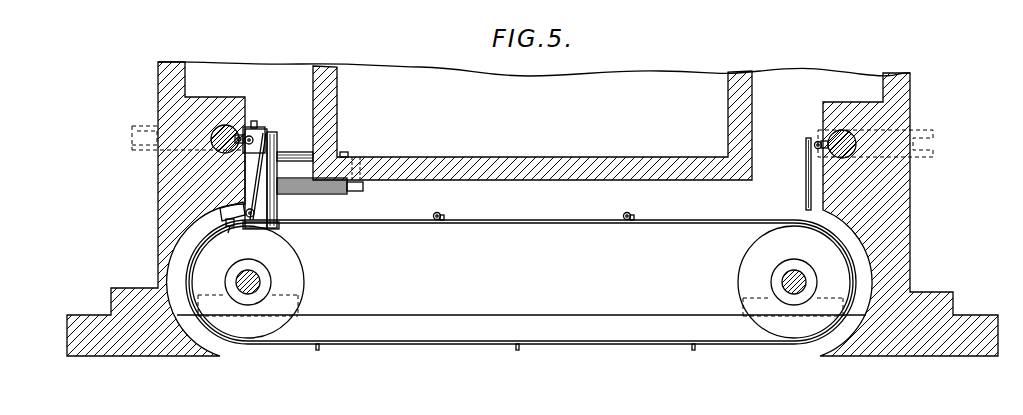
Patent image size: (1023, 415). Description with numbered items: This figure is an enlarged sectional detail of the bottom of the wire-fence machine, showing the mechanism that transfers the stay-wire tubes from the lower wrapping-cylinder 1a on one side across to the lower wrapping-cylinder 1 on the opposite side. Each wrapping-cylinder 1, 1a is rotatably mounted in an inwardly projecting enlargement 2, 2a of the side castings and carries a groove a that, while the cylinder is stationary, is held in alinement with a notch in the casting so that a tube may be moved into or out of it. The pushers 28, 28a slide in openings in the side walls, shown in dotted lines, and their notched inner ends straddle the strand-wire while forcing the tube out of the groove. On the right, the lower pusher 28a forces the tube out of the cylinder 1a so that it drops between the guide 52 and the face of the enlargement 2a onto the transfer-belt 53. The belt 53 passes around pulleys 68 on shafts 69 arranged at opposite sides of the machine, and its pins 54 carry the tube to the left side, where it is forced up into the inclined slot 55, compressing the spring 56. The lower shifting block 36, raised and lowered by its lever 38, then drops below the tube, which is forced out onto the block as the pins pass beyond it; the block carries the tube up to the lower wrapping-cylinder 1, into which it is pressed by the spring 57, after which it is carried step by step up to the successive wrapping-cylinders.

The wrapping-cylinder 1 is at (225, 125).
The wrapping-cylinder 1a is at (848, 148).
The enlargement 2 is at (195, 113).
The enlargement 2a is at (867, 115).
The pusher 28 is at (134, 150).
The pusher 28a is at (936, 133).
The groove a is at (242, 126).
The shifting block 36 is at (261, 128).
The lever 38 is at (278, 208).
The guide 52 is at (806, 184).
The transfer-belt 53 is at (390, 219).
The pin 54 is at (443, 220).
The inclined slot 55 is at (220, 205).
The spring 56 is at (230, 224).
The spring 57 is at (258, 167).
The pulley 68 is at (298, 260).
The shaft 69 is at (261, 282).